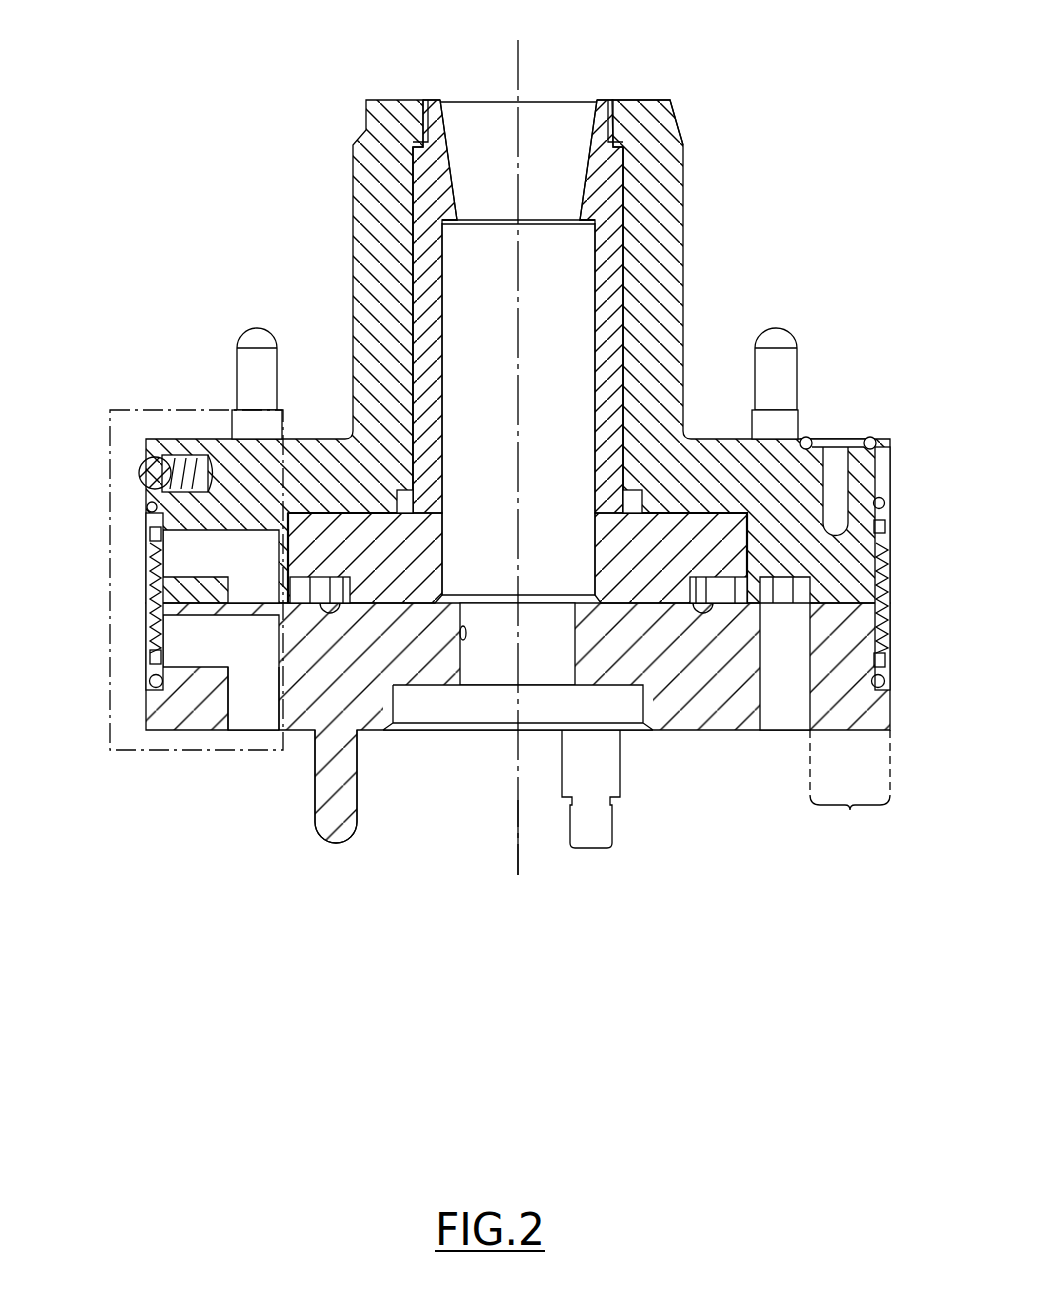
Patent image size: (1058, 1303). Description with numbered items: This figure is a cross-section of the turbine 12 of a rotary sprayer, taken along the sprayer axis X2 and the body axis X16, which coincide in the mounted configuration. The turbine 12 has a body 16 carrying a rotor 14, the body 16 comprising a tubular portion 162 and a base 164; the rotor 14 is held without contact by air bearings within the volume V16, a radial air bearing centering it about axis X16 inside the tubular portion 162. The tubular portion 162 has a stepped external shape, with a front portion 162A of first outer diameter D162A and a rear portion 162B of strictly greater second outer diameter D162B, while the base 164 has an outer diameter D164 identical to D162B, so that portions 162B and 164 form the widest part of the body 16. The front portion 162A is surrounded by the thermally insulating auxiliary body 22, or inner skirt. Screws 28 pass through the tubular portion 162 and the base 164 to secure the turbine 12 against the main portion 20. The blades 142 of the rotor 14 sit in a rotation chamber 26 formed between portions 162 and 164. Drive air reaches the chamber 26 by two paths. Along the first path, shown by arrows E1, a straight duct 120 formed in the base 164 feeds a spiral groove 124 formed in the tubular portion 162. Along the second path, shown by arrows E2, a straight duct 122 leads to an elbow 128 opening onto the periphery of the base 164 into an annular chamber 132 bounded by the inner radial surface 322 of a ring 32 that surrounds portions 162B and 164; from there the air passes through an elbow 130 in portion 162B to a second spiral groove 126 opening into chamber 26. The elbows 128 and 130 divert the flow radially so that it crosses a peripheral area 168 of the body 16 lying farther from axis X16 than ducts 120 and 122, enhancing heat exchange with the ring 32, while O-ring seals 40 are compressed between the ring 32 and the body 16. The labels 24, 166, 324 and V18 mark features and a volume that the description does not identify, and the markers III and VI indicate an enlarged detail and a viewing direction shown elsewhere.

The turbine 12 is at (762, 188).
The rotor 14 is at (428, 228).
The body 16 is at (664, 360).
The main portion 20 is at (695, 500).
The auxiliary body 22 is at (418, 617).
The cylindrical bore 24 is at (628, 278).
The rotation chamber 26 is at (823, 520).
The screws 28 is at (593, 767).
The ring 32 is at (148, 570).
The seal 40 is at (890, 683).
The duct 120 is at (793, 688).
The duct 122 is at (233, 745).
The groove 124 is at (803, 590).
The second groove 126 is at (307, 505).
The elbow 128 is at (148, 625).
The elbow 130 is at (148, 495).
The annular chamber 132 is at (823, 657).
The blades 142 is at (720, 592).
The tubular portion 162 is at (175, 205).
The front portion 162A is at (372, 273).
The rear portion 162B is at (303, 460).
The base 164 is at (305, 740).
The upper body end 166 is at (663, 140).
The peripheral area 168 is at (850, 788).
The inner radial surface 322 is at (877, 467).
The seal ring 324 is at (893, 515).
The axis X16 is at (525, 52).
The axis X2 is at (532, 866).
The volume V16 is at (636, 315).
The inner volume V18 is at (552, 379).
The first outer diameter D162A is at (747, 220).
The second outer diameter D162B is at (960, 443).
The outer diameter D164 is at (960, 722).
The flow arrows E1 is at (780, 597).
The flow arrows E2 is at (163, 513).
The detail III is at (128, 750).
The section VI is at (467, 888).